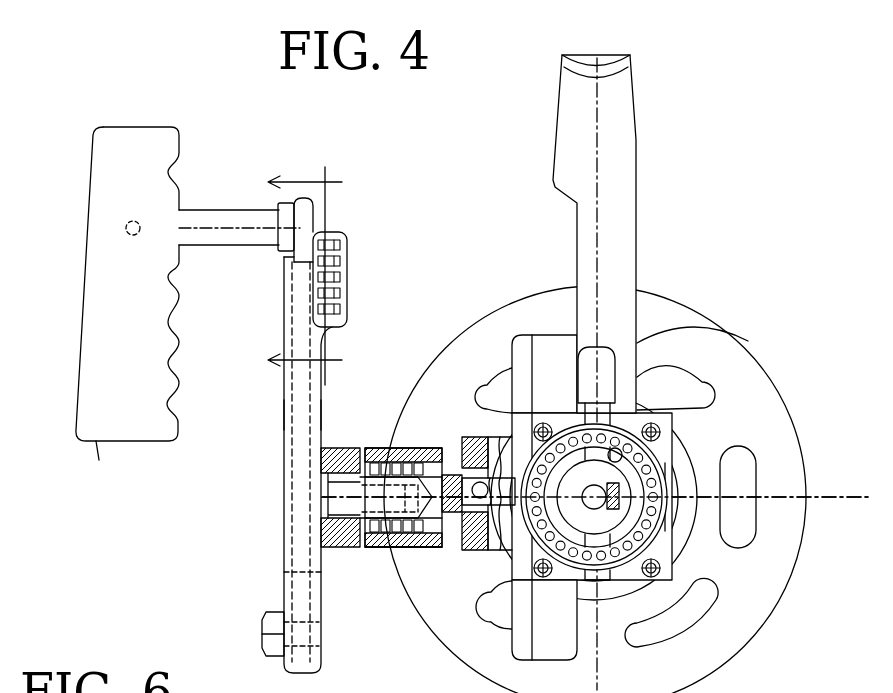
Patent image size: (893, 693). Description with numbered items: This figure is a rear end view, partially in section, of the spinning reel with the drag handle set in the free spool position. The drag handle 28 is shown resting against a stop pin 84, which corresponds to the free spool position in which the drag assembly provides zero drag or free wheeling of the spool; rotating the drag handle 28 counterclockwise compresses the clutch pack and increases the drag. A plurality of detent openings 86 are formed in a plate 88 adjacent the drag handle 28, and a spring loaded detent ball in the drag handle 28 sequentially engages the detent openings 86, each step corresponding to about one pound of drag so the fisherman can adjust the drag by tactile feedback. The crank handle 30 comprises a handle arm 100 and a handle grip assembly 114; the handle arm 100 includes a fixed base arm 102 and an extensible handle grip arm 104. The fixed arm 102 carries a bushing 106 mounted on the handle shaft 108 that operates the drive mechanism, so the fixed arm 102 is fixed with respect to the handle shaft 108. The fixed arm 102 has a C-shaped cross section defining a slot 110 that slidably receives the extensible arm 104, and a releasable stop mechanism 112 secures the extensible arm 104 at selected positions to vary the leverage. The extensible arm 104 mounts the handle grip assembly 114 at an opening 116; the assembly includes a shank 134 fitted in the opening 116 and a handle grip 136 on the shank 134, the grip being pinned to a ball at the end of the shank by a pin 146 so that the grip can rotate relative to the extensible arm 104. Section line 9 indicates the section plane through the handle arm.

The section line 9- 9 is at (317, 276).
The drag handle 28 is at (642, 298).
The handle 30 is at (282, 416).
The stop pin 84 is at (640, 407).
The detent openings 86 is at (657, 532).
The plate 88 is at (748, 341).
The handle arm 100 is at (284, 439).
The fixed base arm 102 is at (322, 580).
The extensible handle grip arm 104 is at (292, 199).
The bushing 106 is at (386, 428).
The handle shaft 108 is at (378, 508).
The slot 110 is at (284, 573).
The releasable stop mechanism 112 is at (352, 278).
The handle grip assembly 114 is at (68, 182).
The opening 116 is at (292, 260).
The shank 134 is at (206, 208).
The handle grip 136 is at (99, 447).
The pin 146 is at (126, 233).